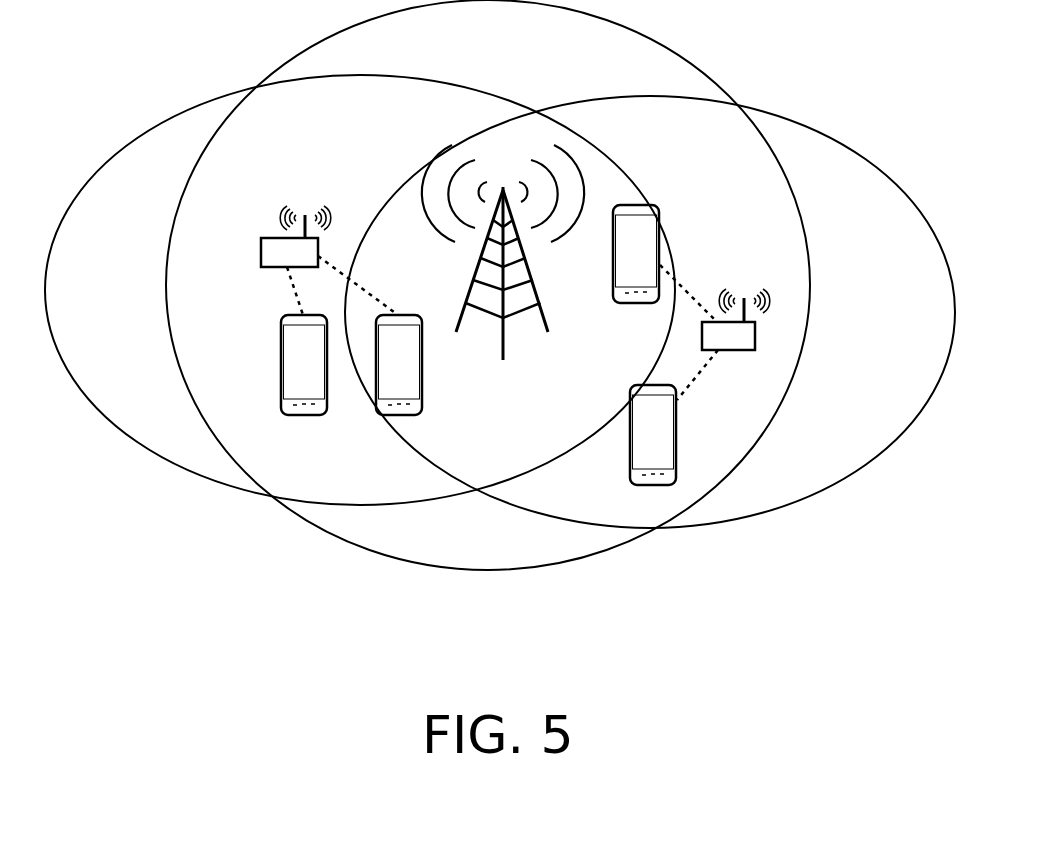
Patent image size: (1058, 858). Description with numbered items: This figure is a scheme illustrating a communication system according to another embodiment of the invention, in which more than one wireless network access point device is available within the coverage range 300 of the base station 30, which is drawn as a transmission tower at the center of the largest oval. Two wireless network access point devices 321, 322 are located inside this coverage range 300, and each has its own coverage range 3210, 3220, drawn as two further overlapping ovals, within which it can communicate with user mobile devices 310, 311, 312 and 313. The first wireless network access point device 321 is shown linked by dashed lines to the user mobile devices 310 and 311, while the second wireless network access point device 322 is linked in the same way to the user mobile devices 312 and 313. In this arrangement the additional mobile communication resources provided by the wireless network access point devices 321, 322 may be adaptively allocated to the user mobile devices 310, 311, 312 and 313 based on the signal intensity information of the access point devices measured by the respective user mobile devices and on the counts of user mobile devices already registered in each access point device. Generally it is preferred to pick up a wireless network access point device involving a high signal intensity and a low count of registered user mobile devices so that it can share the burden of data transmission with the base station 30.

The coverage range of the base station 300 is at (462, 572).
The coverage range of the first wireless network access point device 3210 is at (175, 468).
The coverage range of the second wireless network access point device 3220 is at (775, 512).
The base station 30 is at (515, 290).
The user mobile device 310 is at (305, 413).
The user mobile device 311 is at (412, 382).
The user mobile device 312 is at (615, 252).
The user mobile device 313 is at (637, 448).
The wireless network access point device 321 is at (273, 255).
The wireless network access point device 322 is at (740, 340).